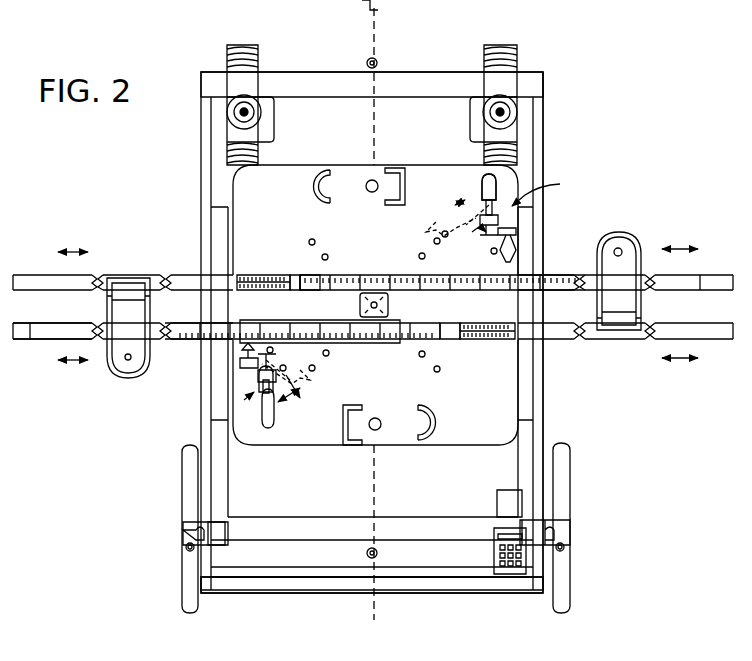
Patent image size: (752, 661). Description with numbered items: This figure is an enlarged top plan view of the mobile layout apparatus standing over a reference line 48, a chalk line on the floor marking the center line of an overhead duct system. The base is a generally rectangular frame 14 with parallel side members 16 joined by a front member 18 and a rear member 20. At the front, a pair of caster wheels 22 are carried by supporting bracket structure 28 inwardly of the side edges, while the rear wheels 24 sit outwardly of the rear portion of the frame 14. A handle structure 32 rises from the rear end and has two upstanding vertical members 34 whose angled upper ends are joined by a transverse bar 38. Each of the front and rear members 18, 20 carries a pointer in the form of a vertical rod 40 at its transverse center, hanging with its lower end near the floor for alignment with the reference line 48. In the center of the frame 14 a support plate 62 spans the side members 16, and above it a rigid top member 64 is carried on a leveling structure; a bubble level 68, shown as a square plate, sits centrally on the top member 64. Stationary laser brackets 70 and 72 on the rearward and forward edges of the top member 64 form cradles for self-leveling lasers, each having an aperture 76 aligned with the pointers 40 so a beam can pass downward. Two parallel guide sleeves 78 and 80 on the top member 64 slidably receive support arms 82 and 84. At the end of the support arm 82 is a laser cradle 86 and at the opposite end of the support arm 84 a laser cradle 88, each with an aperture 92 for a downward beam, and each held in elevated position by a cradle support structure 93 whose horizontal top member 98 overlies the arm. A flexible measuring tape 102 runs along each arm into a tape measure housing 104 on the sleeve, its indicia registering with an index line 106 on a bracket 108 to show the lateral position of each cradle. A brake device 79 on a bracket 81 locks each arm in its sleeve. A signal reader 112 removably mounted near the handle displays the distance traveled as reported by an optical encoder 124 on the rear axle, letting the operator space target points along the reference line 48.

The frame 14 is at (538, 133).
The side members 16 is at (545, 86).
The front member 18 is at (445, 77).
The rear member 20 is at (262, 535).
The caster wheels 22 is at (500, 47).
The rear wheels 24 is at (190, 456).
The supporting bracket structure 28 is at (230, 135).
The handle structure 32 is at (232, 593).
The upstanding vertical members 34 is at (215, 522).
The transverse bar 38 is at (345, 590).
The vertical rod 40 is at (374, 59).
The reference line 48 is at (372, 487).
The support plate 62 is at (222, 210).
The top member 64 is at (498, 195).
The bubble level 68 is at (392, 304).
The laser bracket 70 is at (436, 440).
The laser bracket 72 is at (318, 168).
The aperture 76 is at (380, 430).
The guide sleeve 78 is at (298, 284).
The brake device 79 is at (514, 200).
The guide sleeve 80 is at (355, 342).
The bracket 81 is at (272, 345).
The support arm 82 is at (182, 280).
The support arm 84 is at (705, 345).
The laser cradle 86 is at (628, 236).
The laser cradle 88 is at (110, 372).
The aperture 92 is at (126, 362).
The cradle support structure 93 is at (14, 348).
The top member 98 is at (705, 279).
The flexible measuring tape 102 is at (175, 340).
The tape measure housing 104 is at (255, 277).
The index line 106 is at (388, 280).
The bracket 108 is at (362, 283).
The signal reader 112 is at (512, 562).
The optical encoder 124 is at (510, 500).